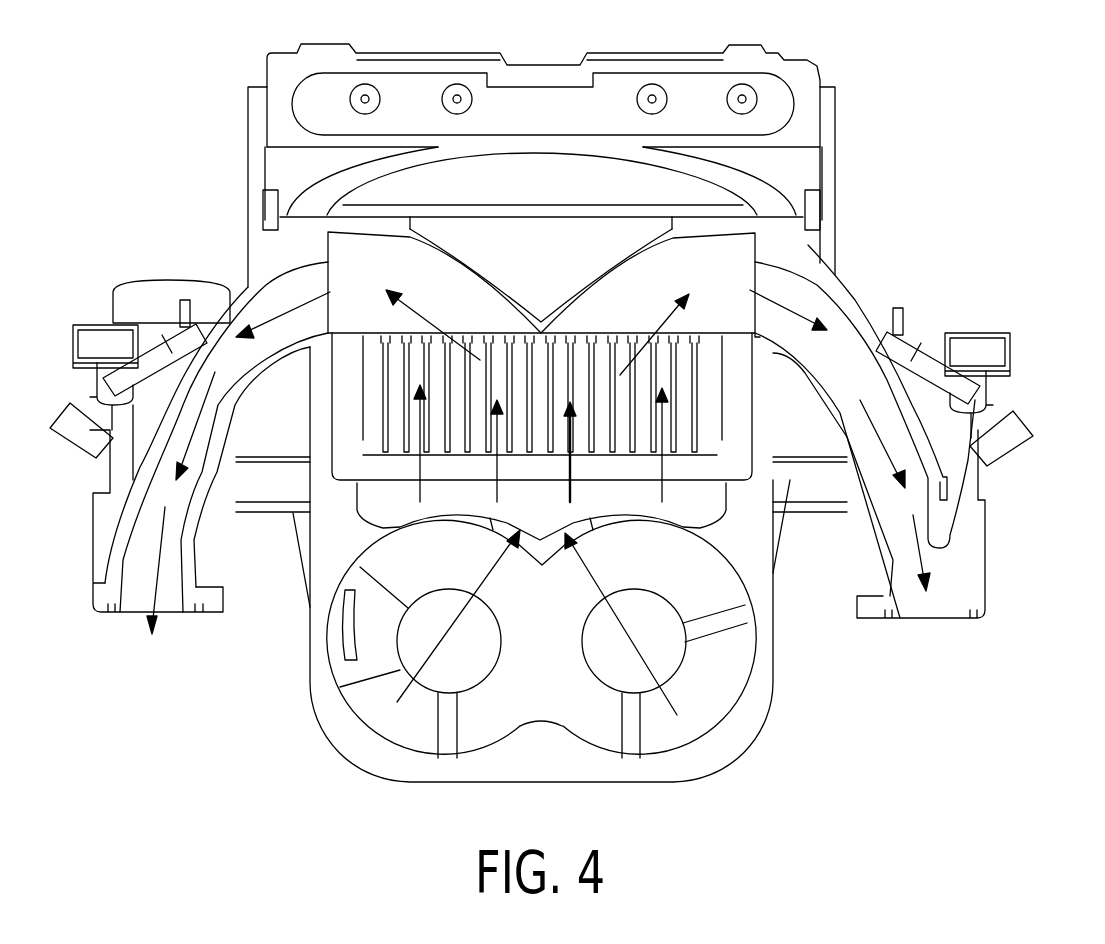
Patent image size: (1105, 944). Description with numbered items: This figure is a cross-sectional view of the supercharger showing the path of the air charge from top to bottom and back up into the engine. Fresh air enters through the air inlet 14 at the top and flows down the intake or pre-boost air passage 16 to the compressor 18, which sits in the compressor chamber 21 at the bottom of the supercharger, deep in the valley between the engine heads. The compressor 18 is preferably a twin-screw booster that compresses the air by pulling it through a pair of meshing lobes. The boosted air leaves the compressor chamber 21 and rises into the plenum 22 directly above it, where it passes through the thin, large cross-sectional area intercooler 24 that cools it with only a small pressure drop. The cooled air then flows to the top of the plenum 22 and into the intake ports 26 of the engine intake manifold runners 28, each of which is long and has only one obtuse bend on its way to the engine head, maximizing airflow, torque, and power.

The air inlet 14 is at (273, 100).
The intake air passage 16 is at (740, 105).
The compressor 18 is at (655, 693).
The compressor chamber 21 is at (498, 720).
The plenum 22 is at (378, 280).
The intercooler 24 is at (383, 432).
The intake port 26 is at (787, 283).
The intake manifold runner 28 is at (183, 337).